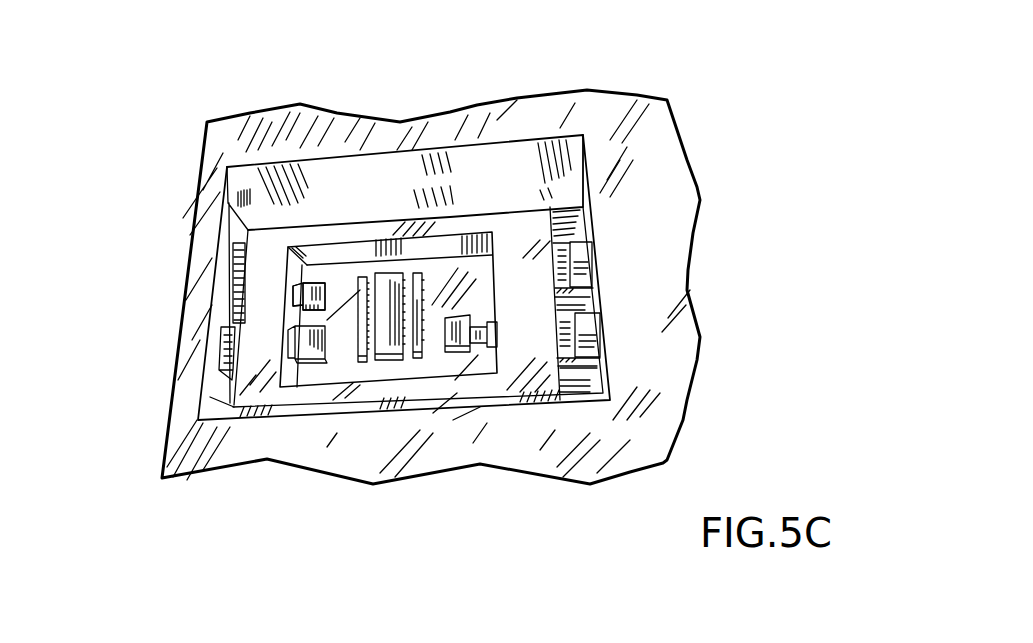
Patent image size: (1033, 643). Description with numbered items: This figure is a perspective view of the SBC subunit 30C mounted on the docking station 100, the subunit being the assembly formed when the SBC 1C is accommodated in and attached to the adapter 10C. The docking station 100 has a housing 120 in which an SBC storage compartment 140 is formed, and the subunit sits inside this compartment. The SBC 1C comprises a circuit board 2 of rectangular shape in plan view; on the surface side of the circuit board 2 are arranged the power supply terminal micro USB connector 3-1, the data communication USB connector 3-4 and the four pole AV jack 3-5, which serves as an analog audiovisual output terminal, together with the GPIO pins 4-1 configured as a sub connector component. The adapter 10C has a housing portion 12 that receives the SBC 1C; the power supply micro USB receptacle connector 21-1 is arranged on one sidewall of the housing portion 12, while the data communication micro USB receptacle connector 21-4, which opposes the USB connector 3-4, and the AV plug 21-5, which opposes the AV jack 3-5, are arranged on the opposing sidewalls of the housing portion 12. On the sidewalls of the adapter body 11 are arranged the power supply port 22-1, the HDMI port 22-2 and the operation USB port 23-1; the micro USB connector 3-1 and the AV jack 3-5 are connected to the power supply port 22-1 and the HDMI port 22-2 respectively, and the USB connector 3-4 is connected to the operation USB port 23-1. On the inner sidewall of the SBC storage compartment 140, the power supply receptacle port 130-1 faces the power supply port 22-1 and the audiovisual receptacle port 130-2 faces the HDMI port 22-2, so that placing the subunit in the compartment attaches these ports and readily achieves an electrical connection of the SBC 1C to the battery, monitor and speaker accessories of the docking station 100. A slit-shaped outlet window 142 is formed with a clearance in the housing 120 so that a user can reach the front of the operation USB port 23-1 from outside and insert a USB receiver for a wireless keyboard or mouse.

The docking station 100 is at (700, 188).
The housing 120 is at (630, 125).
The adapter 10C is at (402, 210).
The SBC storage compartment 140 is at (482, 168).
The SBC subunit 30C is at (512, 190).
The power supply terminal micro USB connector 3-1 is at (300, 250).
The housing portion 12 is at (371, 245).
The circuit board 2 is at (338, 273).
The SBC 1C is at (324, 260).
The power supply micro USB receptacle connector 21-1 is at (297, 290).
The data communication micro USB receptacle connector 21-4 is at (292, 357).
The data communication USB connector 3-4 is at (320, 362).
The GPIO pins 4-1 is at (413, 360).
The 4 pole AV jack 3-5 is at (458, 355).
The AV plug 21-5 is at (498, 347).
The adapter body 11 is at (260, 387).
The outlet window 142 is at (227, 288).
The operation USB port 23-1 is at (223, 347).
The power supply receptacle port 130-1 is at (586, 264).
The power supply port 22-1 is at (565, 272).
The audiovisual receptacle port 130-2 is at (581, 332).
The HDMI port 22-2 is at (567, 347).